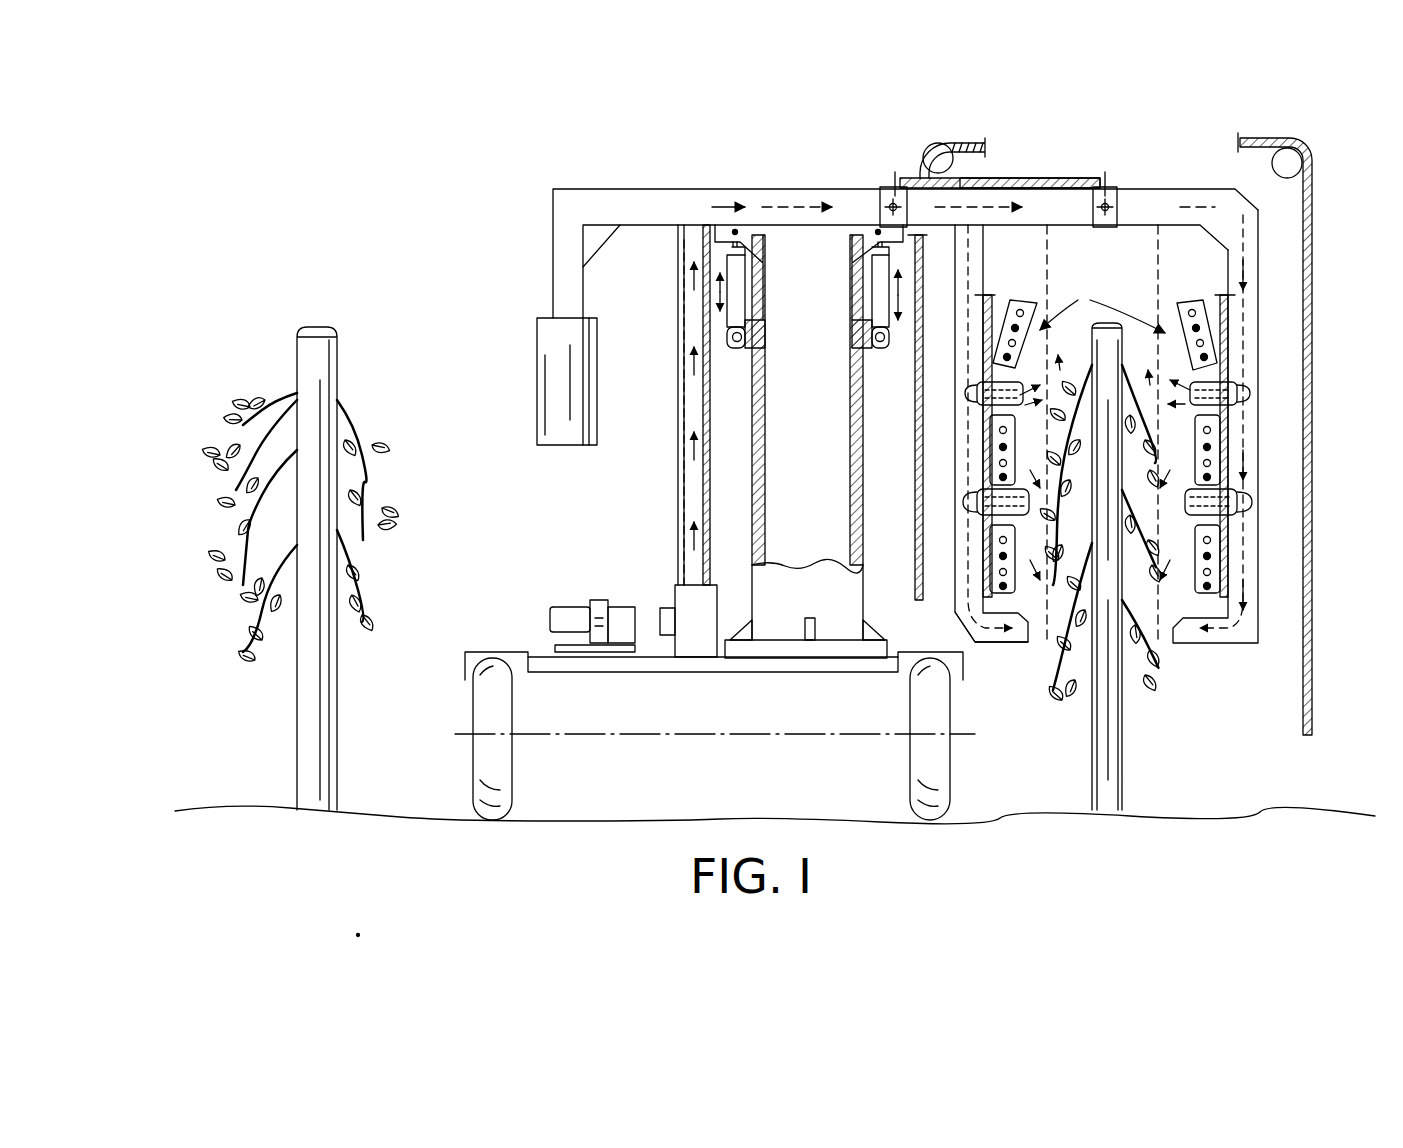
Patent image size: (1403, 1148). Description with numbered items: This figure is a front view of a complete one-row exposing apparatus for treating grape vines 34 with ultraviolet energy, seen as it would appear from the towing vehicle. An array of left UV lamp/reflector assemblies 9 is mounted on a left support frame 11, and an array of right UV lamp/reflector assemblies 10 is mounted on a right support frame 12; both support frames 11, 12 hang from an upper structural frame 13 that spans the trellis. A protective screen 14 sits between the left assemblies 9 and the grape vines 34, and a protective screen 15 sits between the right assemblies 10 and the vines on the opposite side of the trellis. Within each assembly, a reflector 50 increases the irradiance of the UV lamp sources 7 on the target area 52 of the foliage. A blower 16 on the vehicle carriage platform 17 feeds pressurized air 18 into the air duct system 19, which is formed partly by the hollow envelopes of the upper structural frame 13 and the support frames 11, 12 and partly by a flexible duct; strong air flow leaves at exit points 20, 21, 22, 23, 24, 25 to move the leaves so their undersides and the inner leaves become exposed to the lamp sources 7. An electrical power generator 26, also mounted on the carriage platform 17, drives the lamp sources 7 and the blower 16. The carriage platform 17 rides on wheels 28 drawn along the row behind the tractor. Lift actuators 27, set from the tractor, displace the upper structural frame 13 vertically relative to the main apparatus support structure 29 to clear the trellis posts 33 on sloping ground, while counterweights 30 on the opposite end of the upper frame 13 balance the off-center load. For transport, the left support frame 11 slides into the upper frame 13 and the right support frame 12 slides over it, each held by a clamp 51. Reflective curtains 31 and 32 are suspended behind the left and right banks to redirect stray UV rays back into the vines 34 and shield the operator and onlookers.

The UV lamp sources 7 is at (1105, 428).
The left UV lamp/reflector assemblies 9 is at (1003, 300).
The right UV lamp/reflector assemblies 10 is at (1210, 298).
The left support frame 11 is at (993, 645).
The right support frame 12 is at (1258, 630).
The upper structural frame 13 is at (722, 188).
The protective screen 14 is at (1045, 240).
The protective screen 15 is at (1160, 258).
The blower 16 is at (675, 600).
The vehicle carriage platform 17 is at (800, 675).
The pressurized air 18 is at (680, 246).
The air duct system 19 is at (680, 311).
The air flow exit point 20 is at (1022, 427).
The air flow exit point 21 is at (1021, 450).
The air flow exit point 22 is at (1018, 559).
The air flow exit point 23 is at (1188, 559).
The air flow exit point 24 is at (1190, 450).
The air flow exit point 25 is at (1186, 425).
The electrical power generator 26 is at (560, 607).
The lift actuators 27 is at (872, 308).
The wheels 28 is at (473, 735).
The main apparatus support structure 29 is at (862, 410).
The counterweights 30 is at (537, 355).
The reflective curtain 31 is at (1313, 300).
The reflective curtain 32 is at (927, 150).
The trellis posts 33 is at (337, 348).
The grape vines 34 is at (262, 660).
The reflector 50 is at (985, 178).
The clamp 51 is at (883, 200).
The target area 52 is at (1012, 178).